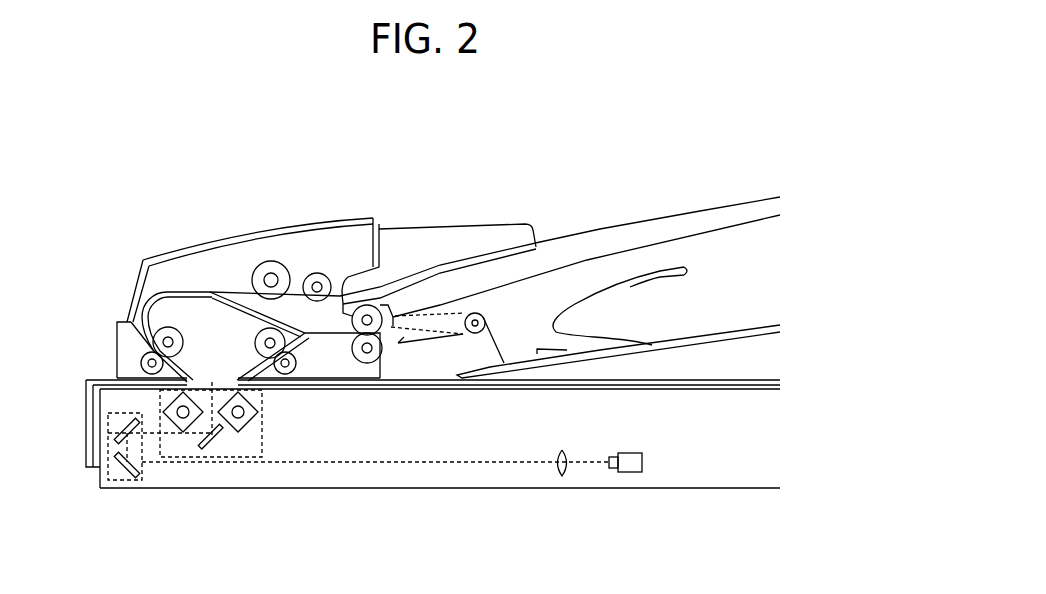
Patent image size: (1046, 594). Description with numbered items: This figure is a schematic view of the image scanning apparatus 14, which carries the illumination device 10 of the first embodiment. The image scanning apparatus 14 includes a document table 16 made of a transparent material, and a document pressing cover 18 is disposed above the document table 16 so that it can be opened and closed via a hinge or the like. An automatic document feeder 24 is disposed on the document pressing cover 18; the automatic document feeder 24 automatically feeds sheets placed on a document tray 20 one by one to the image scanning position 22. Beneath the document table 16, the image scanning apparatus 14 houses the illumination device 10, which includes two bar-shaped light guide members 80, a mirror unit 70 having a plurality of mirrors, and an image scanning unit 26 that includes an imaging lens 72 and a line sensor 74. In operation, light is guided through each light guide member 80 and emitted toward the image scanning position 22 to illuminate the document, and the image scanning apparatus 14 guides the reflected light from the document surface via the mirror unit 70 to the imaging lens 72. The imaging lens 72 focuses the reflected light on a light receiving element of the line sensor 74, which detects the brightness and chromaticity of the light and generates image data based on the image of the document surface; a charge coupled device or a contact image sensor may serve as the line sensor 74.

The illumination device 10 is at (268, 428).
The image scanning apparatus 14 is at (176, 178).
The document table 16 is at (575, 387).
The document pressing cover 18 is at (125, 341).
The document tray 20 is at (692, 210).
The image scanning position 22 is at (207, 381).
The automatic document feeder 24 is at (378, 219).
The image scanning unit 26 is at (658, 445).
The mirror unit 70 is at (118, 491).
The imaging lens 72 is at (563, 477).
The line sensor 74 is at (633, 472).
The light guide member 80 is at (168, 412).